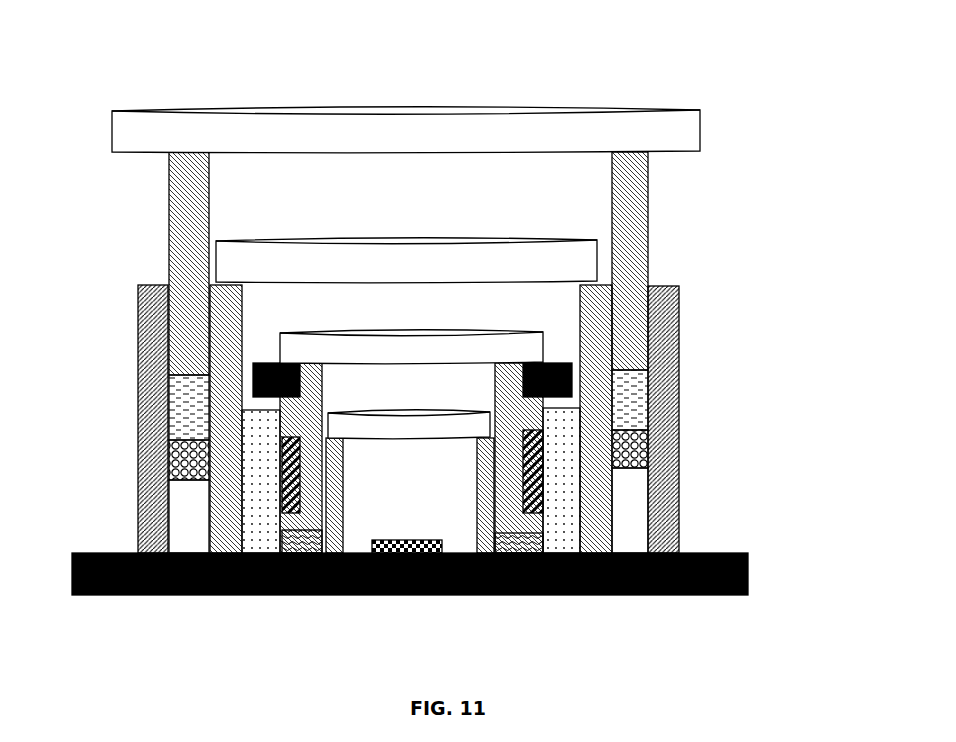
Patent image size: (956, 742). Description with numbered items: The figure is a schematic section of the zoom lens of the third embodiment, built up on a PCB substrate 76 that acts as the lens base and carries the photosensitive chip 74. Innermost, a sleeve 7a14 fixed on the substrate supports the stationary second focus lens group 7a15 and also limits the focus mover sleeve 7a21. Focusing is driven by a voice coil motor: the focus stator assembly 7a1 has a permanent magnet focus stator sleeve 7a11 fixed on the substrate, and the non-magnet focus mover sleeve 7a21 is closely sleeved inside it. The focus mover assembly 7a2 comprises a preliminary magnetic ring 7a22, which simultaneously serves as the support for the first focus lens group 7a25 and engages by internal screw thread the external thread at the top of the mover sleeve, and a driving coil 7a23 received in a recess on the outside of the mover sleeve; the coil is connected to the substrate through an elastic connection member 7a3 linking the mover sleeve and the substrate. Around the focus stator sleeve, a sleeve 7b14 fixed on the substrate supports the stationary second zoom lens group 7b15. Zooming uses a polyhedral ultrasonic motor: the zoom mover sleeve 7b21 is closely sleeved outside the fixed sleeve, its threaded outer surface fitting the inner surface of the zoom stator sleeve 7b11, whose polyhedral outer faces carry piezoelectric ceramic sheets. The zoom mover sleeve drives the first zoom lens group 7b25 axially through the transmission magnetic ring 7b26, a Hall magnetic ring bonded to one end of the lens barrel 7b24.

The PCB substrate 76 is at (718, 575).
The zoom stator sleeve 7b11 is at (152, 533).
The sleeve 7b14 is at (223, 530).
The second zoom lens group 7b15 is at (365, 240).
The zoom mover sleeve 7b21 is at (648, 447).
The lens barrel 7b24 is at (635, 262).
The first zoom lens group 7b25 is at (335, 76).
The transmission magnetic ring 7b26 is at (780, 370).
The focus stator assembly 7a1 is at (405, 522).
The focus stator sleeve 7a11 is at (258, 495).
The focus mover assembly 7a2 is at (561, 458).
The focus mover sleeve 7a21 is at (528, 418).
The preliminary magnetic ring 7a22 is at (543, 380).
The driving coil 7a23 is at (543, 510).
The elastic connection member 7a3 is at (510, 552).
The sleeve 7a14 is at (340, 553).
The second focus lens group 7a15 is at (447, 427).
The first focus lens group 7a25 is at (428, 335).
The photosensitive chip 74 is at (388, 547).